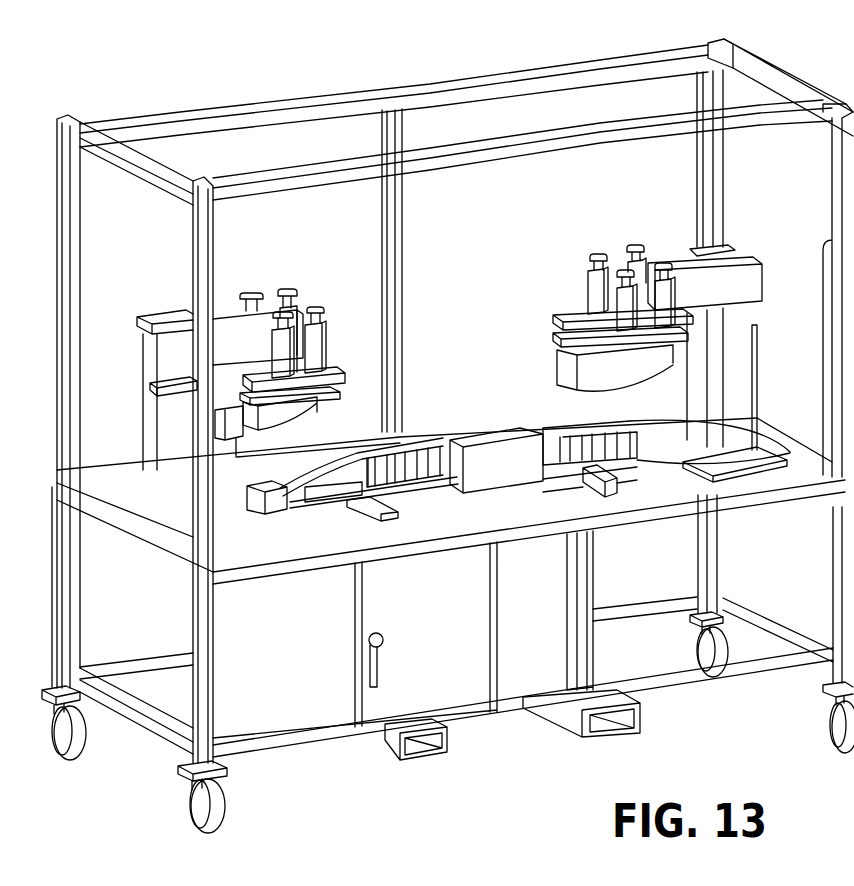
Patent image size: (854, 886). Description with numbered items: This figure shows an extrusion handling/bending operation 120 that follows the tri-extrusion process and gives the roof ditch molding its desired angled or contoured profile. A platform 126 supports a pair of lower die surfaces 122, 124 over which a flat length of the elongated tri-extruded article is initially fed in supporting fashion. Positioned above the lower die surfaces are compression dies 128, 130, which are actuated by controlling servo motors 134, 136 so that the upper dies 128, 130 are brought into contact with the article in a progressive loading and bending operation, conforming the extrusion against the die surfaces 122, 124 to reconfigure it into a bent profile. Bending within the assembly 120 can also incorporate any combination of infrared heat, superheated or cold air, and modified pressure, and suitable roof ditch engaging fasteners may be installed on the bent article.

The extrusion handling/bending operation 120 is at (267, 98).
The die surface 122 is at (404, 450).
The die surface 124 is at (590, 427).
The platform 126 is at (526, 524).
The compression die 128 is at (317, 418).
The compression die 130 is at (620, 393).
The servo motor 134 is at (278, 292).
The servo motor 136 is at (623, 270).